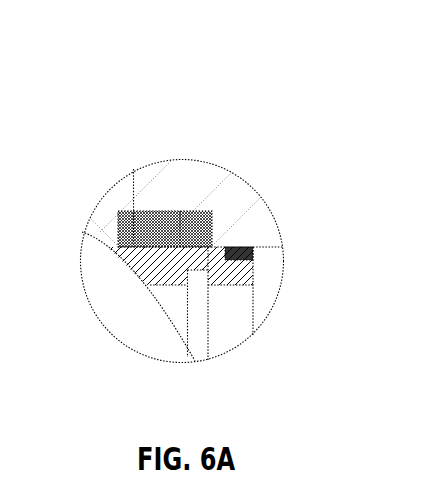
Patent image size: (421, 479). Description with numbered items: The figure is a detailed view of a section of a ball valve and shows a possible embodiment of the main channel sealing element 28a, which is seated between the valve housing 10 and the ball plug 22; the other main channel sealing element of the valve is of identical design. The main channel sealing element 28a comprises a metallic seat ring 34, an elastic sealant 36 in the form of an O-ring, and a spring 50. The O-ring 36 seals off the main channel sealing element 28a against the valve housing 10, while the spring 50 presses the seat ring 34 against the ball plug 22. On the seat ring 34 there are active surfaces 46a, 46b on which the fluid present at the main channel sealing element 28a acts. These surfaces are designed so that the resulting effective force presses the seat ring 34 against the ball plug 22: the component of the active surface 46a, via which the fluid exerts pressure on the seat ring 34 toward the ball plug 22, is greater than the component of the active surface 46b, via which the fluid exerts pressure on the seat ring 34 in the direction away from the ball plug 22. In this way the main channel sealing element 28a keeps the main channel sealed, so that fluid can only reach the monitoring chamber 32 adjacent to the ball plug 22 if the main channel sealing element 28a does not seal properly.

The valve housing 10 is at (258, 208).
The ball plug 22 is at (98, 300).
The main channel sealing element 28a is at (259, 343).
The monitoring chamber 32 is at (123, 201).
The seat ring 34 is at (122, 222).
The elastic sealant 36 is at (243, 248).
The active surface 46a is at (266, 263).
The active surface 46b is at (134, 274).
The spring 50 is at (192, 222).